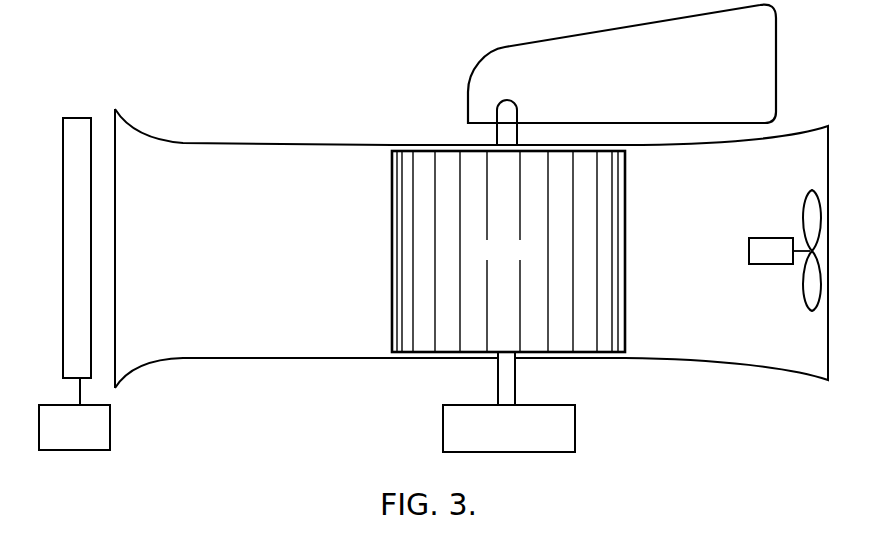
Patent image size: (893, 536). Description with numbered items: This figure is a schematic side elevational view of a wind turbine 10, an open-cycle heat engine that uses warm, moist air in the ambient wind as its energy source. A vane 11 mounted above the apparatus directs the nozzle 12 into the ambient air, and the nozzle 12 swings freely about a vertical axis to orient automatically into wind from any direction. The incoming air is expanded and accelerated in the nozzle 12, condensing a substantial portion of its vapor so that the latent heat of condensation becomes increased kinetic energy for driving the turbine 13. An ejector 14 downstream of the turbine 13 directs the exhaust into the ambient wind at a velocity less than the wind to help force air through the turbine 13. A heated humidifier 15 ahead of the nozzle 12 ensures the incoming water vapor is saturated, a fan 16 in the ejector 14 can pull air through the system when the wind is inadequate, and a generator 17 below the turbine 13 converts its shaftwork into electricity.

The wind turbine 10 is at (366, 60).
The vane 11 is at (777, 43).
The nozzle 12 is at (244, 143).
The turbine 13 is at (420, 150).
The ejector 14 is at (706, 360).
The heated humidifier 15 is at (71, 118).
The fan 16 is at (764, 238).
The generator 17 is at (576, 425).